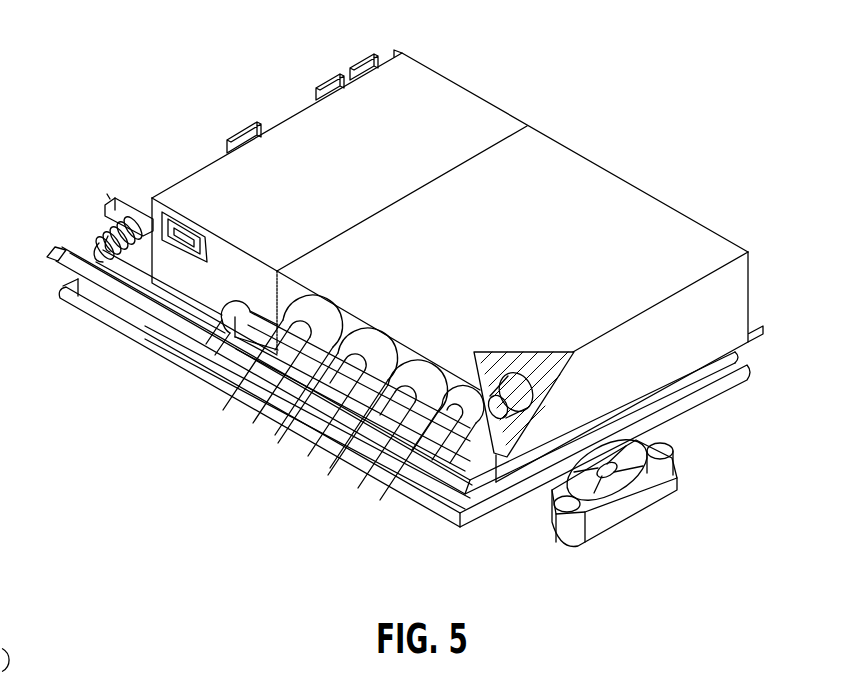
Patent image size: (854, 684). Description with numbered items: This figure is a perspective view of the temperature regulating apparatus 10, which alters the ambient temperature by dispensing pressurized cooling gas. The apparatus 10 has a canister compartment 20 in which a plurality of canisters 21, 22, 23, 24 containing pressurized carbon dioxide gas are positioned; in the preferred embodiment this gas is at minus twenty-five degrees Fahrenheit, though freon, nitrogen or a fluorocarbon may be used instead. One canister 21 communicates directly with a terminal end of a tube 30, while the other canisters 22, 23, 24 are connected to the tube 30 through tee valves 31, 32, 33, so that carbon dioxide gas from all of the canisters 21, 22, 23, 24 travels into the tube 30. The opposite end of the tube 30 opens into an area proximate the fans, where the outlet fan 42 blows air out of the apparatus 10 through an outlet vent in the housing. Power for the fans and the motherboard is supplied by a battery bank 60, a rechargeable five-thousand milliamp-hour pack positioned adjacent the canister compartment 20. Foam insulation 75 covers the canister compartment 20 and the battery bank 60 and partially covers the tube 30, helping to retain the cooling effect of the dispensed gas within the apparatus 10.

The temperature regulating apparatus 10 is at (115, 114).
The canister compartment 20 is at (583, 203).
The canister 21 is at (447, 410).
The canister 22 is at (343, 462).
The canister 23 is at (277, 432).
The canister 24 is at (237, 314).
The tube 30 is at (190, 313).
The tee valve 31 is at (412, 470).
The tee valve 32 is at (334, 437).
The tee valve 33 is at (293, 316).
The outlet fan 42 is at (618, 498).
The battery bank 60 is at (283, 162).
The foam insulation 75 is at (537, 367).